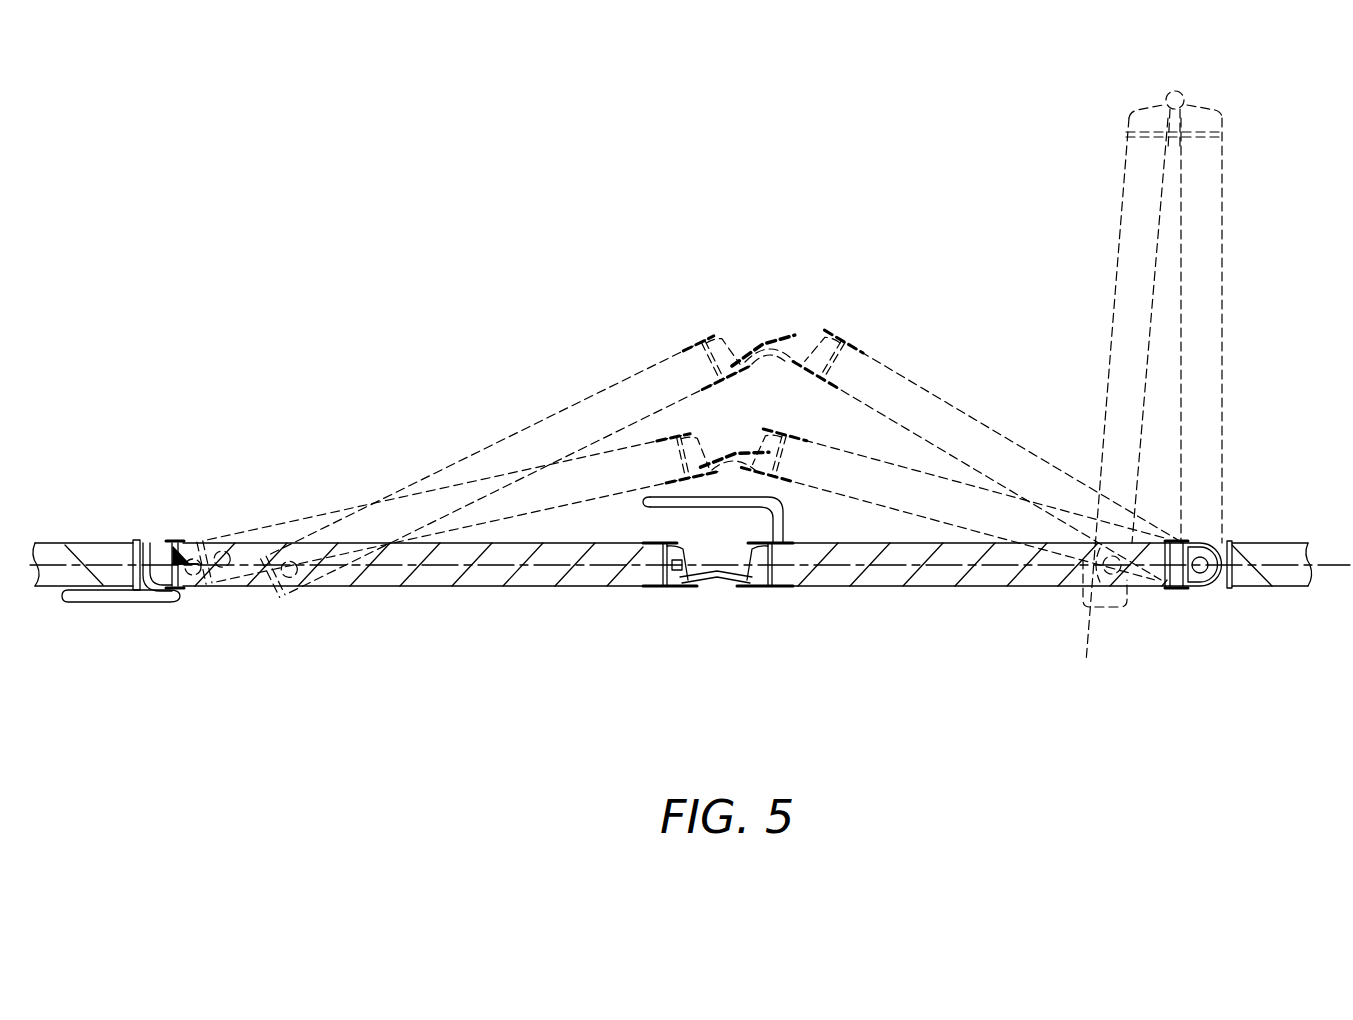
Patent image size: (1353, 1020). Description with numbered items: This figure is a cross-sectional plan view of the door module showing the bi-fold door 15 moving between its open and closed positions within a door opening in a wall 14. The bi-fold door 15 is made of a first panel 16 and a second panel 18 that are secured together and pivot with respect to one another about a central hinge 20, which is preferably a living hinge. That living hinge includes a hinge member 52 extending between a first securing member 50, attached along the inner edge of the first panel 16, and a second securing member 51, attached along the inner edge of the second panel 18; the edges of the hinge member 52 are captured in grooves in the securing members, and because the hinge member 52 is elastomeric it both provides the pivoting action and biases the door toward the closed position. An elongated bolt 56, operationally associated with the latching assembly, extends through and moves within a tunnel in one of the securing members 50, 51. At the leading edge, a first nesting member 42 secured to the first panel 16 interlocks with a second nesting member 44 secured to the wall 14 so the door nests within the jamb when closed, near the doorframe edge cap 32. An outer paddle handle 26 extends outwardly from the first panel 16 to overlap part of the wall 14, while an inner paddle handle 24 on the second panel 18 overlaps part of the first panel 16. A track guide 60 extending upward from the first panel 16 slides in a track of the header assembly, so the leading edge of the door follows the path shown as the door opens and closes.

The wall 14 is at (68, 553).
The bi-fold door 15 is at (514, 641).
The first panel 16 is at (388, 574).
The second panel 18 is at (913, 573).
The central hinge 20 is at (684, 616).
The inner paddle handle 24 is at (650, 503).
The outer paddle handle 26 is at (78, 603).
The doorframe edge cap 32 is at (1203, 593).
The first nesting member 42 is at (157, 545).
The second nesting member 44 is at (153, 591).
The first securing member 50 is at (670, 588).
The second securing member 51 is at (767, 588).
The hinge member 52 is at (717, 571).
The elongated bolt 56 is at (673, 567).
The track guide 60 is at (1150, 397).